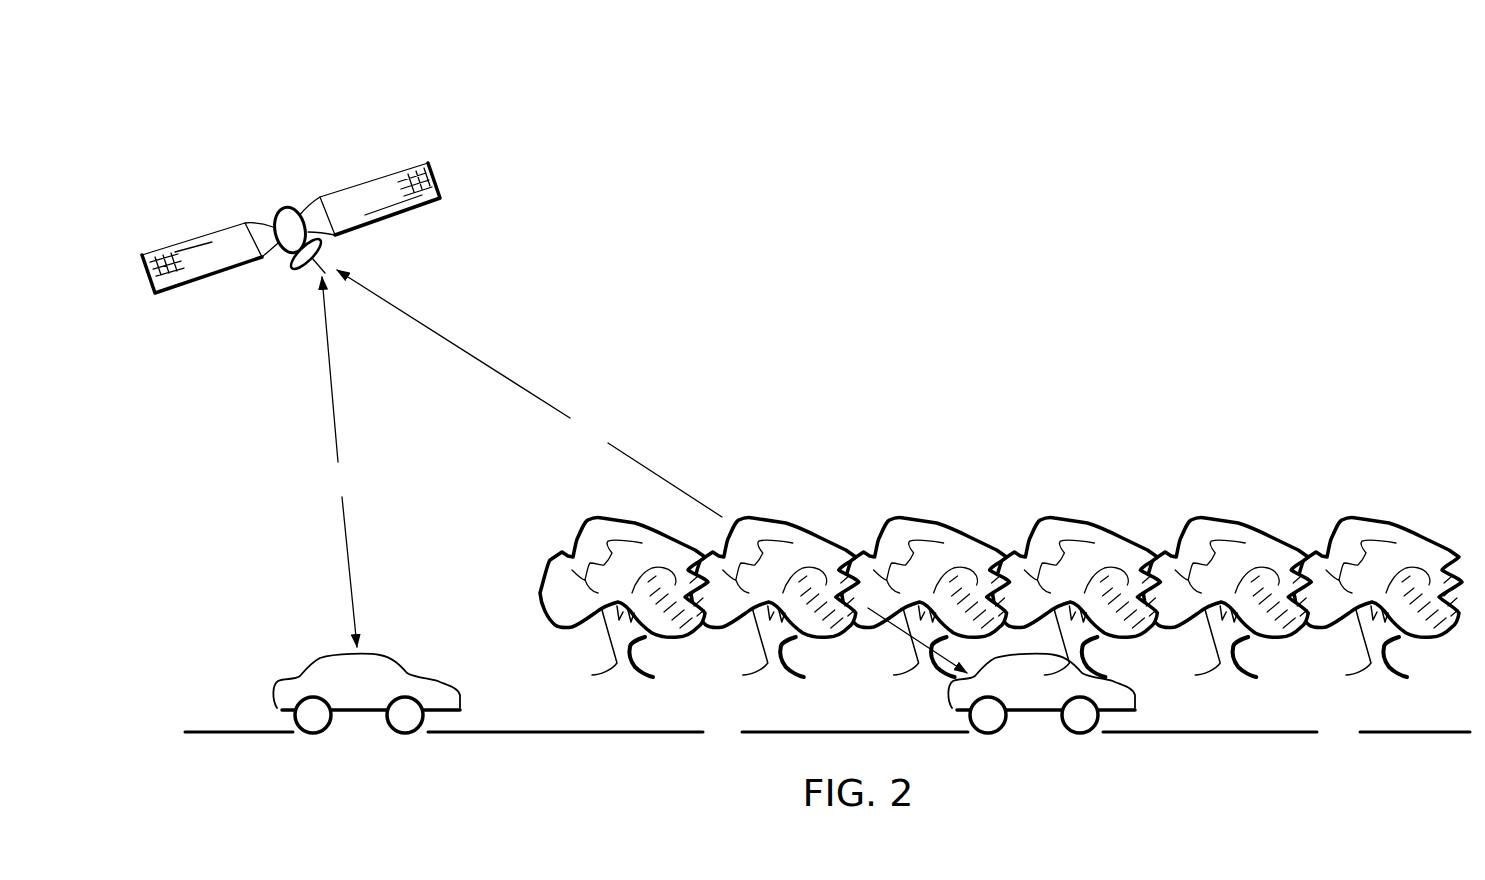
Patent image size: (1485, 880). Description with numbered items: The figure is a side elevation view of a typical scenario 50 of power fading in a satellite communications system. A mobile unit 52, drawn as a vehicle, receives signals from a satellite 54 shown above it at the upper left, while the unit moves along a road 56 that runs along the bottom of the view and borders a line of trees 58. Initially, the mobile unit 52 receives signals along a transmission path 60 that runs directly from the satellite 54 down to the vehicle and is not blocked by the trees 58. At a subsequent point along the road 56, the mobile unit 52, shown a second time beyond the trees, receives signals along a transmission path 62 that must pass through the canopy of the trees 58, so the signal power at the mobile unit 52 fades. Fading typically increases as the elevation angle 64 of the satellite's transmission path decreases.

The scenario of power fading 50 is at (1193, 387).
The mobile unit 52 is at (460, 693).
The satellite 54 is at (342, 188).
The road 56 is at (827, 734).
The line of trees 58 is at (957, 528).
The transmission path 60 is at (341, 462).
The transmission path 62 is at (529, 393).
The elevation angle 64 is at (898, 630).